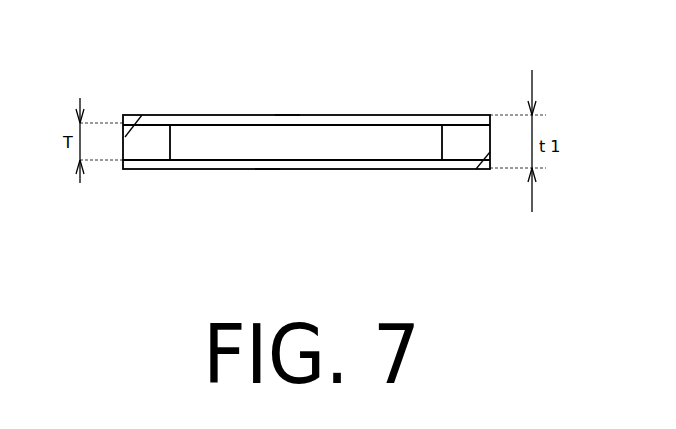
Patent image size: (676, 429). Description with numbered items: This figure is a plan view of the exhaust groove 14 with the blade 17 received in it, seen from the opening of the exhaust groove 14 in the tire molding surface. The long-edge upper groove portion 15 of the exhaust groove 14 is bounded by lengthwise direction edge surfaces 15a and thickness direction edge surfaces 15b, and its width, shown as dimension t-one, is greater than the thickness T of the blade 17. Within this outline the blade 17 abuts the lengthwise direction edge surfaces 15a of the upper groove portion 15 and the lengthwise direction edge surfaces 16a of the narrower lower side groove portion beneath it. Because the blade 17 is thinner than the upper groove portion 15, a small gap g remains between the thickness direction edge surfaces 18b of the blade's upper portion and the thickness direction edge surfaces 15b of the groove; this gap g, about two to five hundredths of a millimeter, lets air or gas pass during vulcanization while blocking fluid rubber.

The exhaust groove 14 is at (403, 114).
The upper groove portion 15 is at (355, 115).
The lengthwise direction edge surface 15a is at (142, 115).
The thickness direction edge surface 15b is at (233, 125).
The lengthwise direction edge surface 16a is at (180, 150).
The blade 17 is at (356, 160).
The thickness direction edge surface 18b is at (315, 125).
The small gap g is at (282, 115).